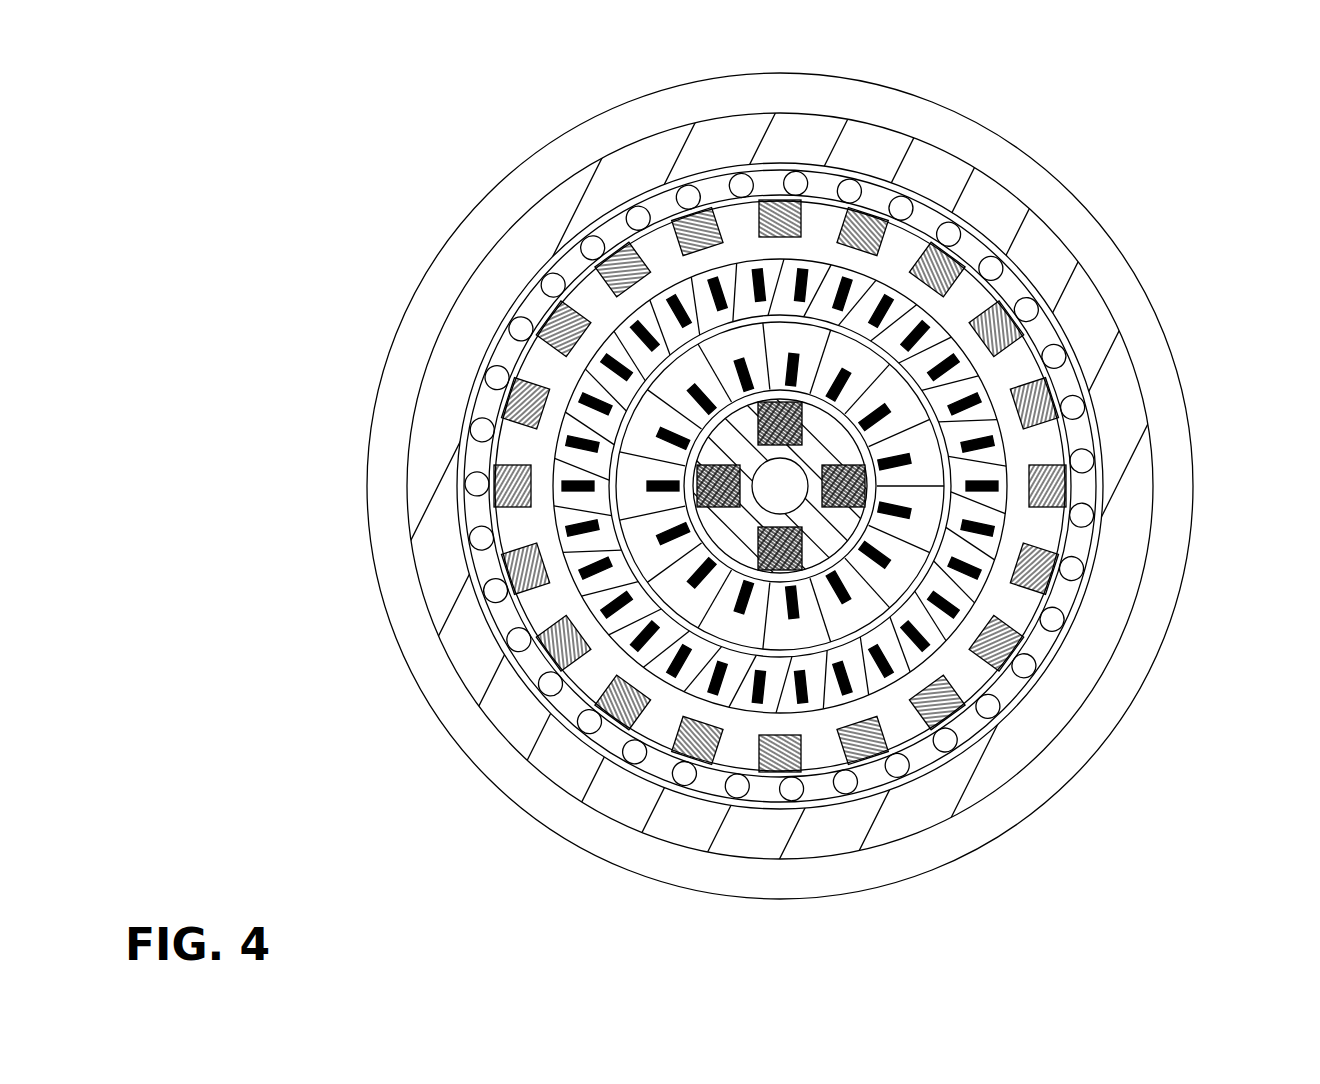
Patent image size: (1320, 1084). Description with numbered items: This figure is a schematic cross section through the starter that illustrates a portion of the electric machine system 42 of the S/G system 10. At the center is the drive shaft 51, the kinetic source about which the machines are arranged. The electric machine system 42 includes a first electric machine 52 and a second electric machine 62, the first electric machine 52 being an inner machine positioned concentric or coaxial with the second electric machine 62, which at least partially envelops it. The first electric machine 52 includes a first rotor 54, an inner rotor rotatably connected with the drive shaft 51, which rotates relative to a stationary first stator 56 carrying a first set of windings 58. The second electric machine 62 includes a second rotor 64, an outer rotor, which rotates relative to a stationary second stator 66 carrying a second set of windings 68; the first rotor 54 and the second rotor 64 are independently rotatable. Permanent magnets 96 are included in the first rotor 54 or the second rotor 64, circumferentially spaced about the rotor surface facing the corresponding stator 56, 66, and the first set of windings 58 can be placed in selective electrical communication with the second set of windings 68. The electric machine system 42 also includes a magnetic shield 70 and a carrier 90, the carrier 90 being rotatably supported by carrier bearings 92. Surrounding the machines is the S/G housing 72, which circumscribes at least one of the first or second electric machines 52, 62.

The S/G system 10 is at (267, 93).
The electric machine system 42 is at (365, 541).
The drive shaft 51 is at (808, 486).
The first electric machine 52 is at (755, 325).
The first rotor 54 is at (813, 402).
The first stator 56 is at (887, 357).
The first set of windings 58 is at (612, 340).
The second electric machine 62 is at (1005, 682).
The second rotor 64 is at (768, 798).
The second stator 66 is at (705, 703).
The second set of windings 68 is at (983, 577).
The magnetic shield 70 is at (882, 678).
The S/G housing 72 is at (1162, 325).
The carrier 90 is at (520, 357).
The carrier bearings 92 is at (1040, 297).
The permanent magnets 96 is at (688, 492).